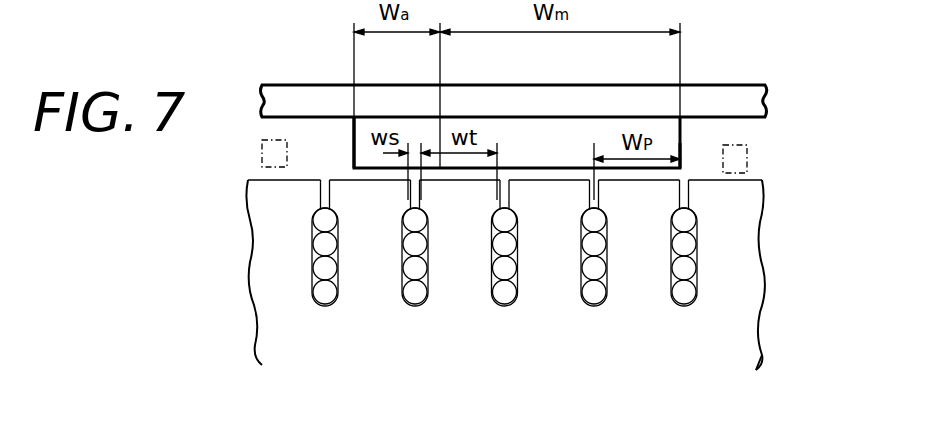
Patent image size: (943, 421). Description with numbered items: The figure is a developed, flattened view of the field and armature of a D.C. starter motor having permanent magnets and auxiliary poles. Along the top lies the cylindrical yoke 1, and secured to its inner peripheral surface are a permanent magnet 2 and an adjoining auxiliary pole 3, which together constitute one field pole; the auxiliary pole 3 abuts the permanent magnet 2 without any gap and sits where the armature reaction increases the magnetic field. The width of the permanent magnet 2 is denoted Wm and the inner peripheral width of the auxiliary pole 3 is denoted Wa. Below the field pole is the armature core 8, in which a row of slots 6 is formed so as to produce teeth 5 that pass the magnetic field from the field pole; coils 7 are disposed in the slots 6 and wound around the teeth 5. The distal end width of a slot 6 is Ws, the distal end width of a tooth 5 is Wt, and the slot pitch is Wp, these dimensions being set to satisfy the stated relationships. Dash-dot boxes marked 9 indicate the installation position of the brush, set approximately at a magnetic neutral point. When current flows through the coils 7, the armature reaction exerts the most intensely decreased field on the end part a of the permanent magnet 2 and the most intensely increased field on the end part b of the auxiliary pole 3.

The yoke 1 is at (715, 95).
The permanent magnet 2 is at (612, 127).
The auxiliary pole 3 is at (354, 143).
The tooth 5 is at (554, 280).
The slot 6 is at (492, 255).
The coil 7 is at (413, 298).
The armature core 8 is at (737, 312).
The installation position of the brush 9 is at (263, 160).
The end part of the permanent magnet a is at (680, 143).
The end part of the auxiliary pole b is at (354, 125).